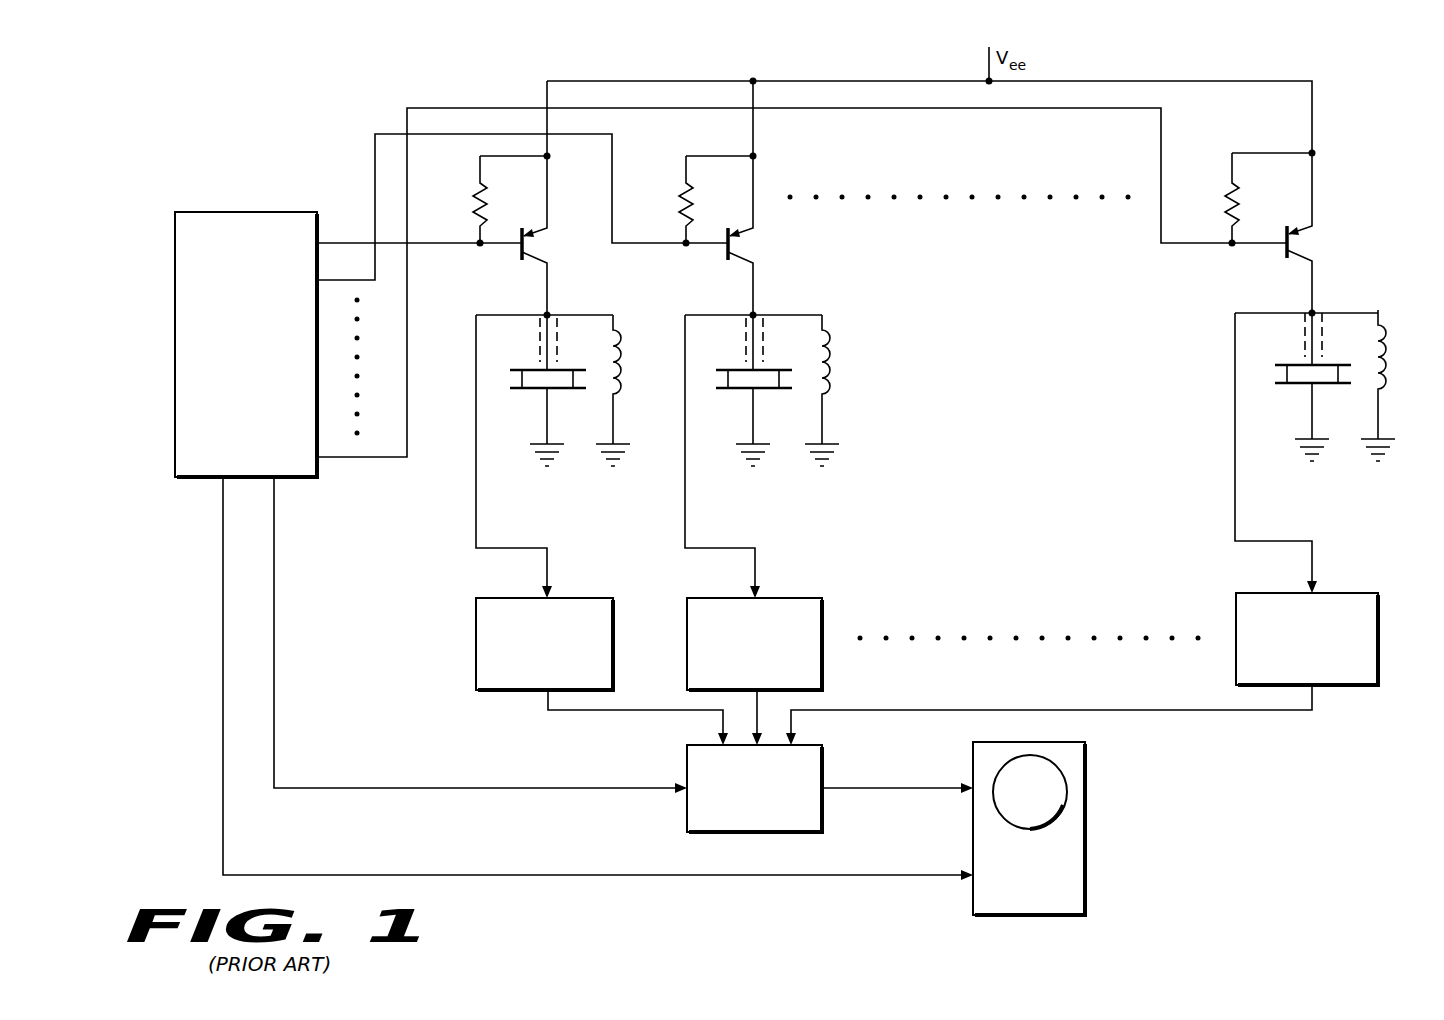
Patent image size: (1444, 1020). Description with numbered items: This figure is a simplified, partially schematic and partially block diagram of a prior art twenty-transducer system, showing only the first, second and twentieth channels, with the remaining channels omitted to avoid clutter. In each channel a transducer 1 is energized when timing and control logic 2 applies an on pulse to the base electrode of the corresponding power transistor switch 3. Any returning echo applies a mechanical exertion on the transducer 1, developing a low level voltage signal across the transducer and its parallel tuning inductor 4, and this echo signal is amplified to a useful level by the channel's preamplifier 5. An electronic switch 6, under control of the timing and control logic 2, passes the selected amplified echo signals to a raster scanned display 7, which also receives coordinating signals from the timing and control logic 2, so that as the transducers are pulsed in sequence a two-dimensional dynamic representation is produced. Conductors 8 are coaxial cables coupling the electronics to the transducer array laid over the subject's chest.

The transducer 1 is at (529, 390).
The timing and control logic 2 is at (283, 212).
The power transistor switch 3 is at (522, 257).
The parallel tuning inductor 4 is at (629, 349).
The preamplifier 5 is at (593, 598).
The electronic switch 6 is at (804, 745).
The raster scanned display 7 is at (1060, 742).
The conductors 8 is at (558, 350).